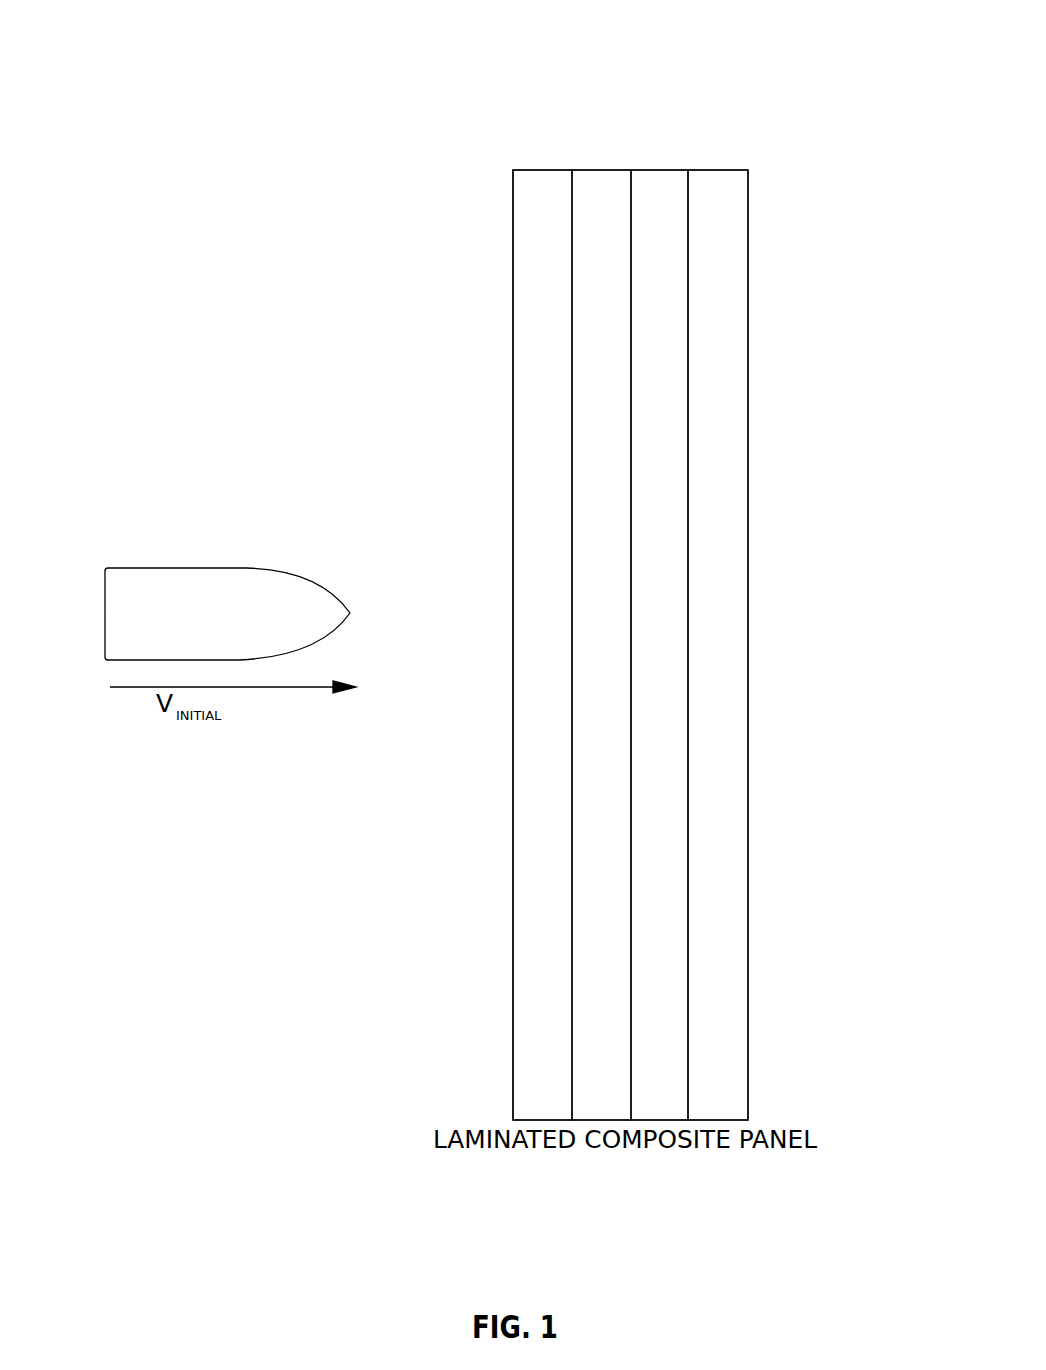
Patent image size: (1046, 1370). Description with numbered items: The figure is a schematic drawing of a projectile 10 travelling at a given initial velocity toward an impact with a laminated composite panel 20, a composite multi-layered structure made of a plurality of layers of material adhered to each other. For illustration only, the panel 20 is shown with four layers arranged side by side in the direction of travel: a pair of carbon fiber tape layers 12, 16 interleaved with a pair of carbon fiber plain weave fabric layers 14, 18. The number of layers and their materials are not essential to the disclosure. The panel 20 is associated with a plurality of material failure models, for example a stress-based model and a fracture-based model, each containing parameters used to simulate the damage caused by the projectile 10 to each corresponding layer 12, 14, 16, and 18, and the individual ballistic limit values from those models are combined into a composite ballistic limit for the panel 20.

The projectile 10 is at (126, 568).
The carbon fiber tape layer 12 is at (528, 170).
The carbon fiber plain weave fabric layer 14 is at (592, 170).
The carbon fiber tape layer 16 is at (658, 170).
The carbon fiber plain weave fabric layer 18 is at (714, 170).
The laminated composite panel 20 is at (878, 65).